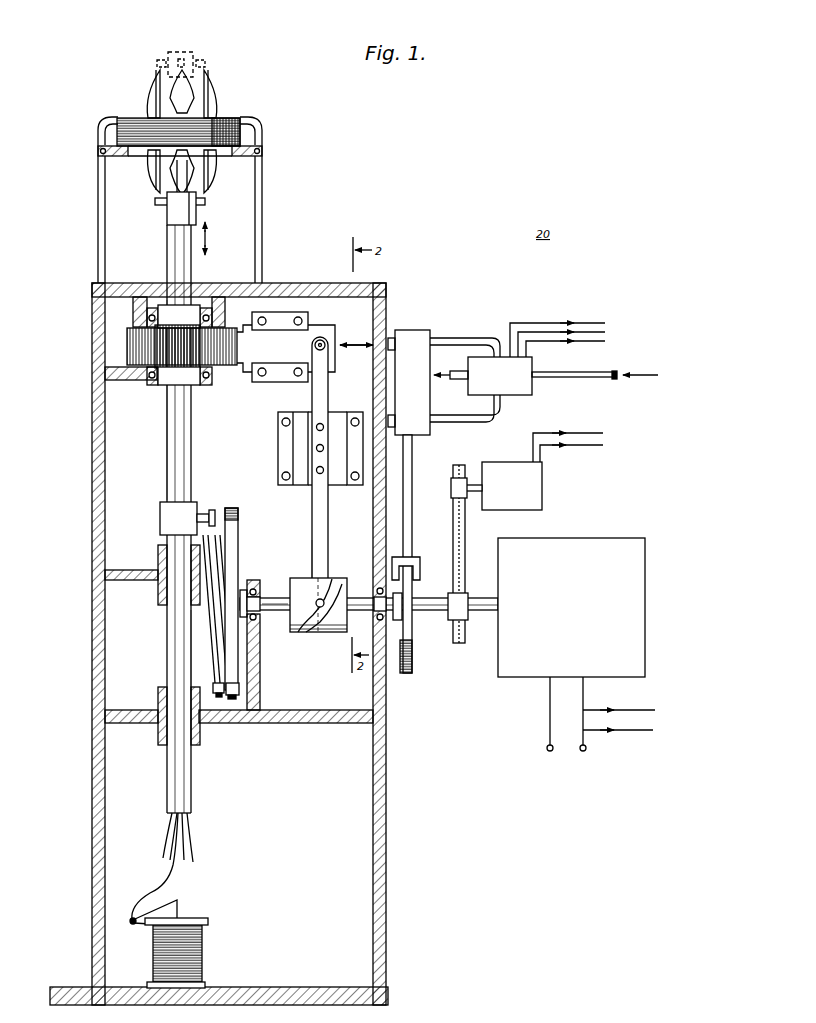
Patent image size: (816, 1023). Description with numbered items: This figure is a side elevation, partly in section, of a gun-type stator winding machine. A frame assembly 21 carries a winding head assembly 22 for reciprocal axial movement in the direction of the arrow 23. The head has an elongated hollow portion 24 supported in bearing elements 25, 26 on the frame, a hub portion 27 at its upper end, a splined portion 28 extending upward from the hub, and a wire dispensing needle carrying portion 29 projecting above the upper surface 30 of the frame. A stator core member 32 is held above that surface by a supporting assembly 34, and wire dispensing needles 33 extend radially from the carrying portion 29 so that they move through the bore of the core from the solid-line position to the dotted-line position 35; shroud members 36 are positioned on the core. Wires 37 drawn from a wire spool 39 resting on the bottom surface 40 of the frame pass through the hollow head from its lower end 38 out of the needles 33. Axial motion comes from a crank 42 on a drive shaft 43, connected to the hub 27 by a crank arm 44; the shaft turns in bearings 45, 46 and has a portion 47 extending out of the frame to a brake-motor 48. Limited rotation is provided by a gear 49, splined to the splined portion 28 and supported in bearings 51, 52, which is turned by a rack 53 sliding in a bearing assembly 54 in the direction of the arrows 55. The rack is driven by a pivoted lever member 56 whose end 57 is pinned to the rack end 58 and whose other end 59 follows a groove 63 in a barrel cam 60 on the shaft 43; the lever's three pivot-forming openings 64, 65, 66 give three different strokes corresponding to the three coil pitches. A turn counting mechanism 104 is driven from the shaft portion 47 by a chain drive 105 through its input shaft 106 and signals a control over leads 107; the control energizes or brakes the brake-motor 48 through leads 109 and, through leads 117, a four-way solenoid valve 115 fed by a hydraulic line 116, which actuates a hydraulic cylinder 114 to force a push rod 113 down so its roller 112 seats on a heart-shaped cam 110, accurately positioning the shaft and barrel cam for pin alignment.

The frame assembly 21 is at (92, 430).
The winding head assembly 22 is at (166, 446).
The arrow 23 is at (208, 238).
The elongated hollow portion 24 is at (167, 648).
The bearing element 25 is at (158, 598).
The bearing element 26 is at (200, 736).
The hub portion 27 is at (160, 522).
The splined portion 28 is at (194, 438).
The wire dispensing needle carrying portion 29 is at (167, 212).
The upper surface 30 is at (290, 283).
The stator core member 32 is at (228, 120).
The wire dispensing needle 33 is at (205, 201).
The supporting assembly 34 is at (262, 178).
The dotted line position 35 is at (194, 53).
The shroud member 36 is at (216, 98).
The wire 37 is at (190, 833).
The lower end 38 is at (167, 784).
The wire spool 39 is at (197, 918).
The bottom surface 40 is at (245, 987).
The crank 42 is at (239, 542).
The drive shaft 43 is at (277, 611).
The crank arm 44 is at (214, 632).
The bearing 45 is at (260, 590).
The bearing 46 is at (376, 590).
The shaft portion 47 is at (440, 611).
The brake-motor 48 is at (610, 538).
The gear 49 is at (203, 348).
The bearing 51 is at (155, 385).
The bearing 52 is at (155, 305).
The rack 53 is at (218, 330).
The bearing assembly 54 is at (292, 312).
The arrow 55 is at (352, 345).
The pivoted lever member 56 is at (330, 402).
The lever end 57 is at (314, 344).
The rack end 58 is at (333, 328).
The lever end 59 is at (328, 544).
The barrel cam 60 is at (300, 578).
The groove 63 is at (312, 628).
The pivot-forming opening 64 is at (316, 427).
The pivot-forming opening 65 is at (316, 448).
The pivot-forming opening 66 is at (316, 470).
The turn counting mechanism 104 is at (543, 486).
The chain drive 105 is at (466, 546).
The input shaft 106 is at (463, 478).
The leads 107 is at (592, 433).
The leads 109 is at (656, 710).
The heart-shaped cam 110 is at (410, 673).
The roller 112 is at (412, 558).
The push rod 113 is at (412, 472).
The hydraulic cylinder 114 is at (415, 332).
The four-way solenoid valve 115 is at (532, 388).
The hydraulic line 116 is at (594, 374).
The leads 117 is at (594, 323).